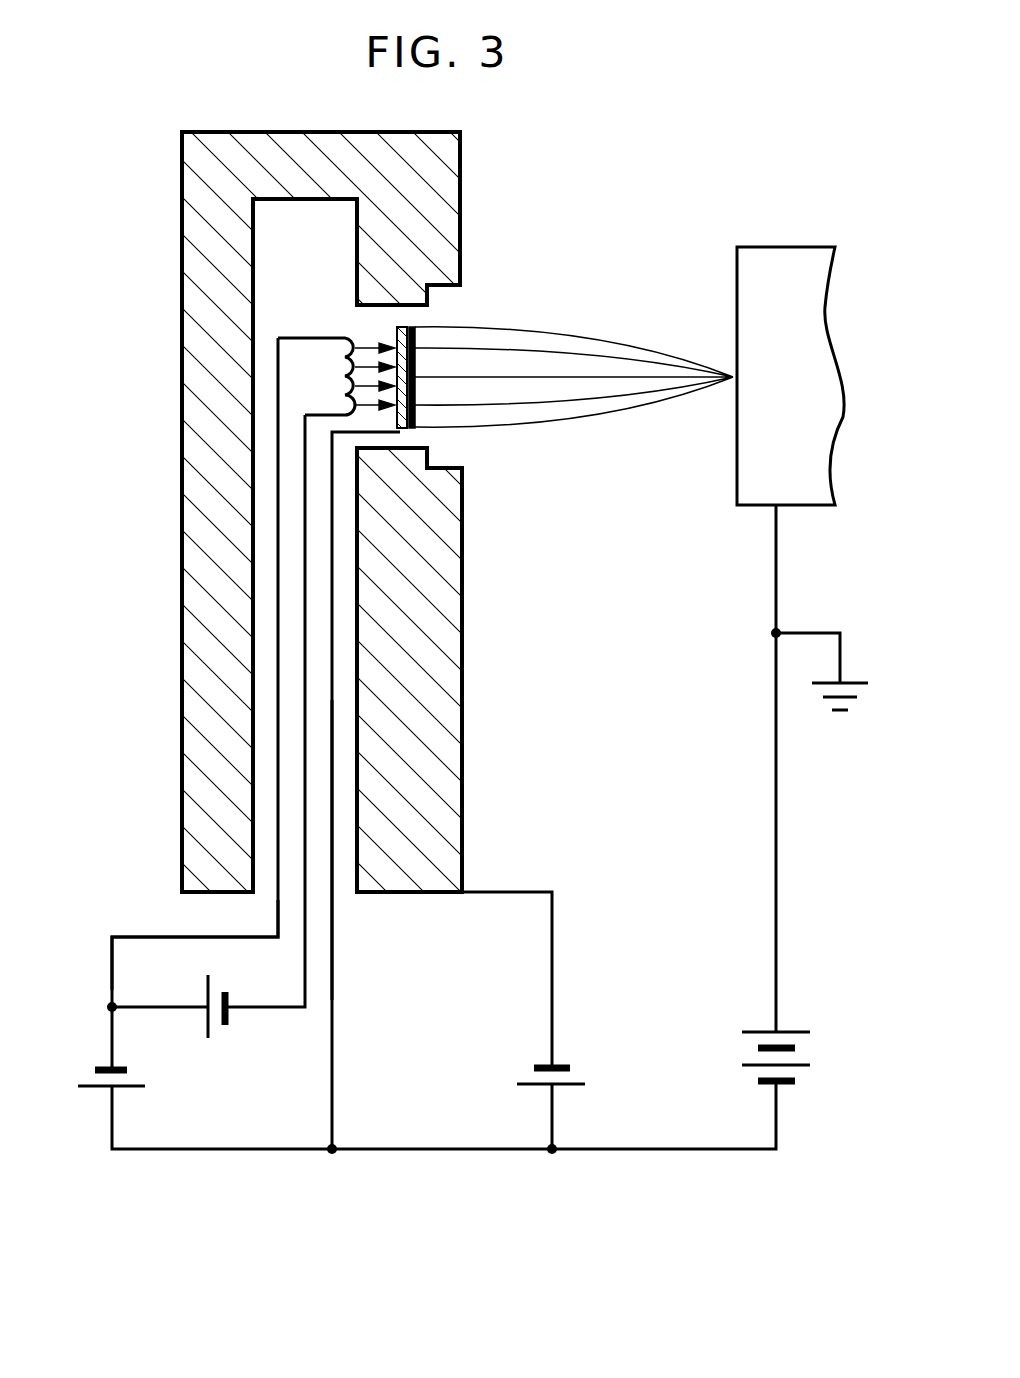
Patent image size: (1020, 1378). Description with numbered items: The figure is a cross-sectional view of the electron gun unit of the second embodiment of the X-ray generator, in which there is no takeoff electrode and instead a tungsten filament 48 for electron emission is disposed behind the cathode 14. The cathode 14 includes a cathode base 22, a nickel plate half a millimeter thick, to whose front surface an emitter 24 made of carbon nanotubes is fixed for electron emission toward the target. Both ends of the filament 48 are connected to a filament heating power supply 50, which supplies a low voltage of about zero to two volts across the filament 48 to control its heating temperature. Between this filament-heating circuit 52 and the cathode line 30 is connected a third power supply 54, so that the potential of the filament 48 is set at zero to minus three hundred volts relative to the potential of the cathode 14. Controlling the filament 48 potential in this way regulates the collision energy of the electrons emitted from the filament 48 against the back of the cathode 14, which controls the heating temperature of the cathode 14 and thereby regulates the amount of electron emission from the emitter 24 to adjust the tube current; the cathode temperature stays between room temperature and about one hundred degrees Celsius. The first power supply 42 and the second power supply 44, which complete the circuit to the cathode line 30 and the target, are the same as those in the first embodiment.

The cathode 14 is at (470, 450).
The cathode base 22 is at (399, 430).
The emitter 24 is at (414, 420).
The cathode line 30 is at (337, 972).
The first power supply 42 is at (810, 1053).
The second power supply 44 is at (588, 1072).
The tungsten filament 48 is at (342, 378).
The filament heating power supply 50 is at (219, 1038).
The filament-heating circuit 52 is at (124, 907).
The third power supply 54 is at (82, 1073).